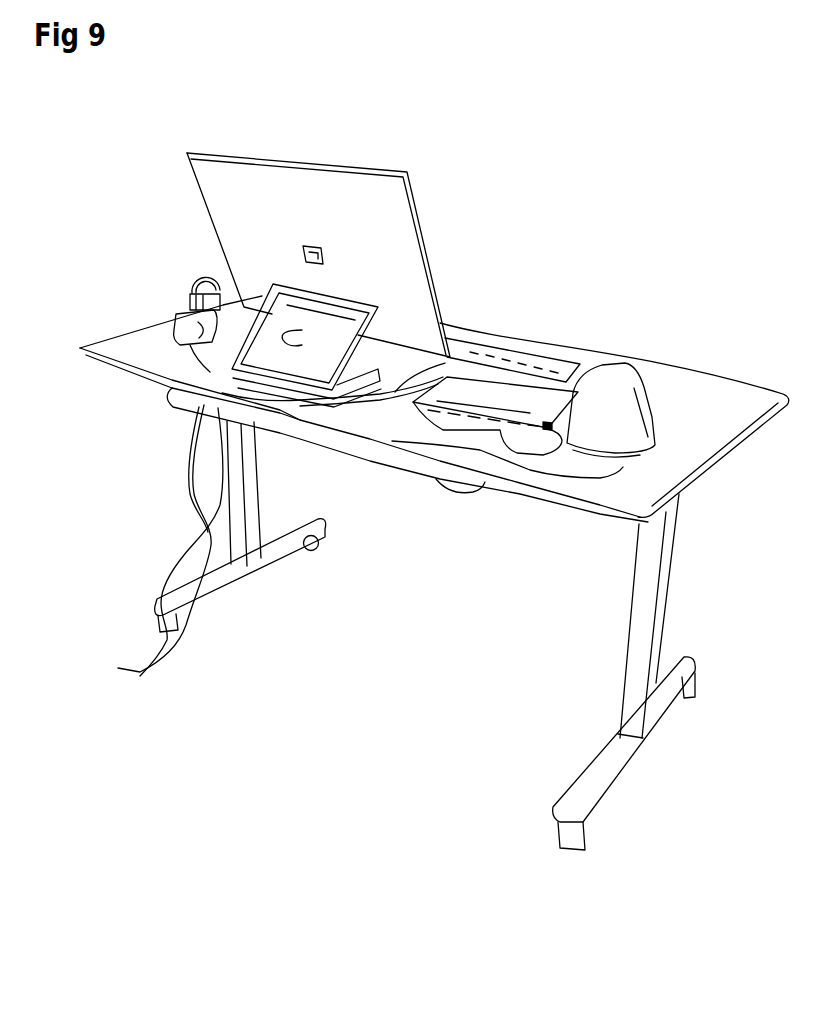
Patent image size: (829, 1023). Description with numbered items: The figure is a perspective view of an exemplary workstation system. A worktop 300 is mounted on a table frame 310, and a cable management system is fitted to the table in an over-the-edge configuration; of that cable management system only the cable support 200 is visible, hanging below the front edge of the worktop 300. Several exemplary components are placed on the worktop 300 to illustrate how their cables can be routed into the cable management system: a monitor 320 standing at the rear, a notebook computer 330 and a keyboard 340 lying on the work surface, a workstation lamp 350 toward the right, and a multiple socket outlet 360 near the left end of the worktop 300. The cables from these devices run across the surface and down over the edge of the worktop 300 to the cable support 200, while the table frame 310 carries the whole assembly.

The cable support 200 is at (447, 478).
The worktop 300 is at (587, 497).
The table frame 310 is at (635, 598).
The monitor 320 is at (427, 258).
The notebook computer 330 is at (560, 397).
The keyboard 340 is at (497, 358).
The workstation lamp 350 is at (637, 388).
The multiple socket outlet 360 is at (178, 312).